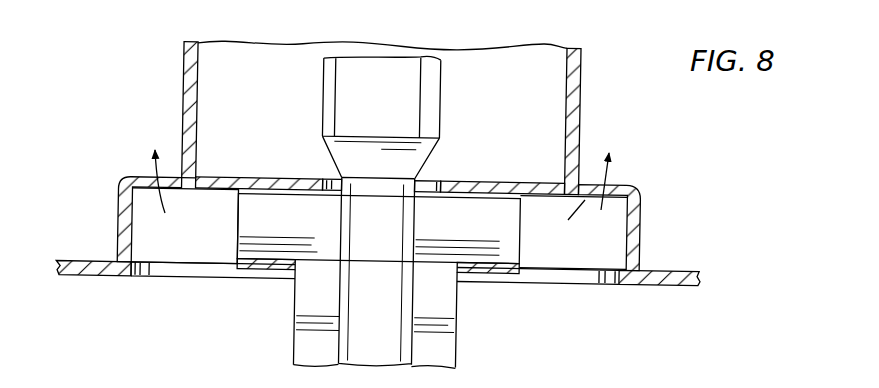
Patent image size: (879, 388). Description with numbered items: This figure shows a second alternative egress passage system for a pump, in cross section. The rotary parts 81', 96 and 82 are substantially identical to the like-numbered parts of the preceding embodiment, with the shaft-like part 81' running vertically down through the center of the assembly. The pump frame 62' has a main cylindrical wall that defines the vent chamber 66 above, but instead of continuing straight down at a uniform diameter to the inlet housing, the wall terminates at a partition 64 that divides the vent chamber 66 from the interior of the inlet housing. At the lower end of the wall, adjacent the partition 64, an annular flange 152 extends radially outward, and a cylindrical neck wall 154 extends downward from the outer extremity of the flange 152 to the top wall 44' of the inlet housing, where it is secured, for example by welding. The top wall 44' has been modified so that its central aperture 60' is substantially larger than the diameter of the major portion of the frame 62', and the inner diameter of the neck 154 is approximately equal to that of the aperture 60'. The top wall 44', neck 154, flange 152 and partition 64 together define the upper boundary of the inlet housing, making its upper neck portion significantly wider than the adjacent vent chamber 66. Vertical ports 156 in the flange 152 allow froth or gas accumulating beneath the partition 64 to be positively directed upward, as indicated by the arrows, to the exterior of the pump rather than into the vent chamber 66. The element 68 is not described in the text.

The vent chamber 66 is at (198, 66).
The pump frame 62' is at (415, 98).
The partition 64 is at (254, 186).
The vertical ports 156 is at (146, 178).
The annular flange 152 is at (618, 186).
The cylindrical neck wall 154 is at (634, 222).
The top wall 44' is at (397, 259).
The central aperture 60' is at (398, 233).
The rotary part 82 is at (268, 239).
The race edge 68 is at (333, 198).
The rotary part 96 is at (305, 335).
The rotary part 81' is at (418, 211).